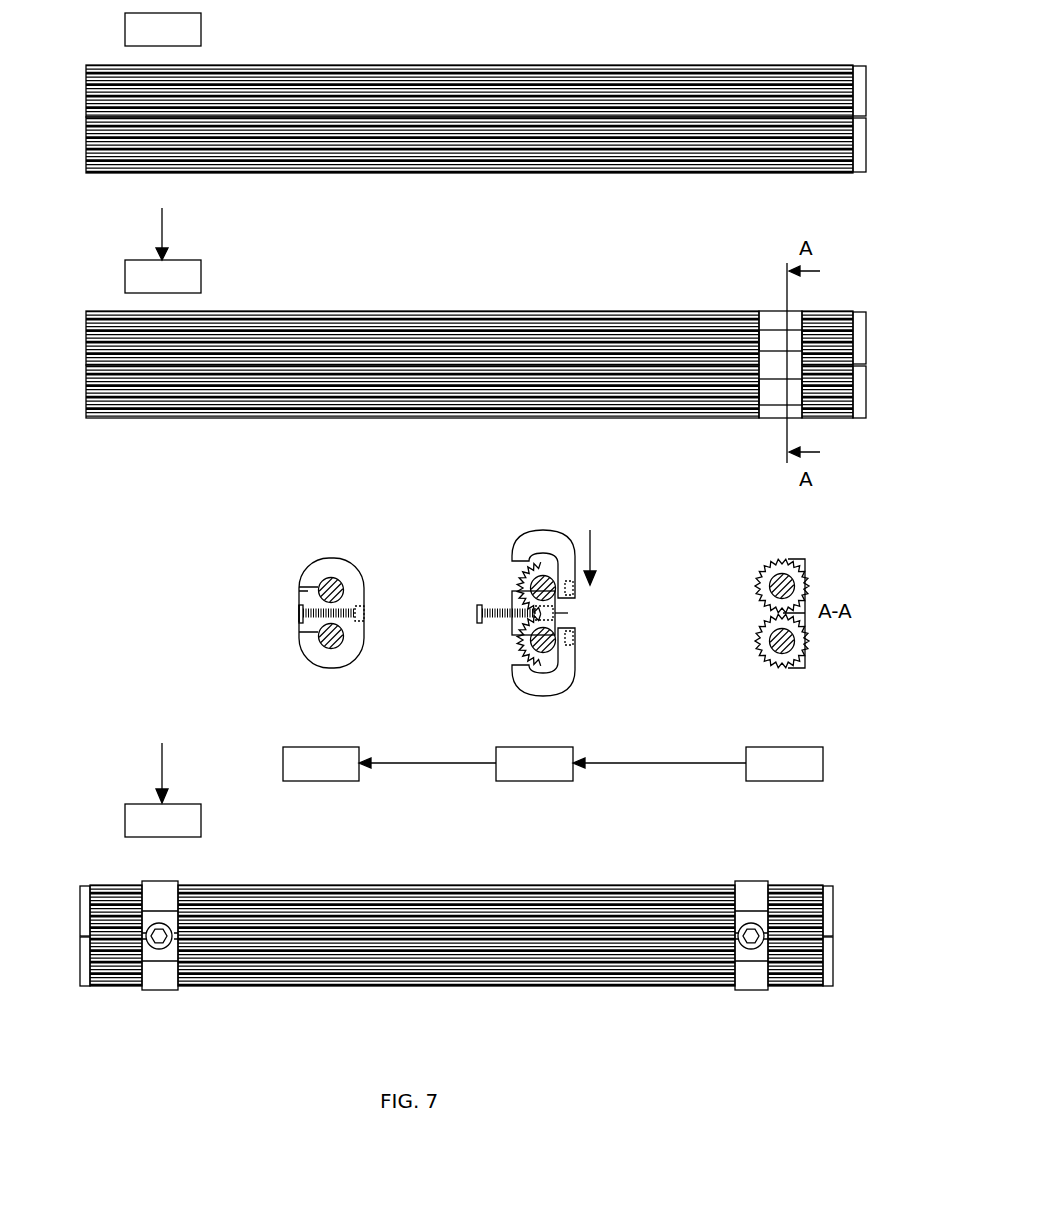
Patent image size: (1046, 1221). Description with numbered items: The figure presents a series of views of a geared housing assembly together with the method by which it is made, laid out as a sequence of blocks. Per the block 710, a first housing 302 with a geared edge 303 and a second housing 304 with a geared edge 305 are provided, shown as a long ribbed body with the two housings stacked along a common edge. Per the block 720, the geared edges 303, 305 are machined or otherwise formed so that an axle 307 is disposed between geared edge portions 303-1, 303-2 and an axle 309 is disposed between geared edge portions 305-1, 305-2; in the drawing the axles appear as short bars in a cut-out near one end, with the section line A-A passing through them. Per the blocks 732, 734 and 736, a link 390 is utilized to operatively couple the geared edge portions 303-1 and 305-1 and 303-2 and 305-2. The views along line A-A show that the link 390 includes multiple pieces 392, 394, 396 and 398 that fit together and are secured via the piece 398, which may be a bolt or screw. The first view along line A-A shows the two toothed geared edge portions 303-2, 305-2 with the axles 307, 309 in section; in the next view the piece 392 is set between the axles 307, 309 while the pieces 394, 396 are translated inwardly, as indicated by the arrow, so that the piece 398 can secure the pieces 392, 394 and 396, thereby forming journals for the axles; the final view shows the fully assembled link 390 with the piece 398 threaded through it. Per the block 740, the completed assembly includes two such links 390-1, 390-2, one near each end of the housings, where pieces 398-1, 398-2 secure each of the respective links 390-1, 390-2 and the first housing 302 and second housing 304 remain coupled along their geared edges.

The block 710 is at (138, 32).
The block 720 is at (138, 279).
The block 732 is at (759, 767).
The block 734 is at (509, 767).
The block 736 is at (296, 767).
The block 740 is at (138, 823).
The first housing 302 is at (850, 58).
The geared edge 303 is at (497, 68).
The second housing 304 is at (850, 163).
The geared edge 305 is at (497, 152).
The geared edge portion 303-1 is at (815, 318).
The geared edge portion 303-2 is at (683, 318).
The geared edge portion 305-1 is at (818, 405).
The geared edge portion 305-2 is at (672, 400).
The axle 307 is at (766, 330).
The axle 309 is at (766, 388).
The link 390 is at (262, 548).
The piece 392 is at (300, 626).
The piece 394 is at (325, 557).
The piece 396 is at (322, 652).
The piece 398 is at (291, 605).
The link 390-1 is at (745, 885).
The link 390-2 is at (158, 885).
The piece 398-1 is at (742, 942).
The piece 398-2 is at (152, 942).